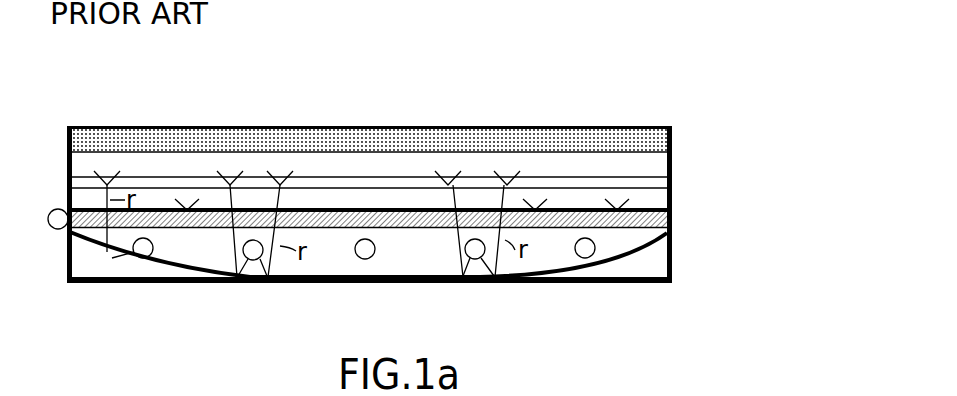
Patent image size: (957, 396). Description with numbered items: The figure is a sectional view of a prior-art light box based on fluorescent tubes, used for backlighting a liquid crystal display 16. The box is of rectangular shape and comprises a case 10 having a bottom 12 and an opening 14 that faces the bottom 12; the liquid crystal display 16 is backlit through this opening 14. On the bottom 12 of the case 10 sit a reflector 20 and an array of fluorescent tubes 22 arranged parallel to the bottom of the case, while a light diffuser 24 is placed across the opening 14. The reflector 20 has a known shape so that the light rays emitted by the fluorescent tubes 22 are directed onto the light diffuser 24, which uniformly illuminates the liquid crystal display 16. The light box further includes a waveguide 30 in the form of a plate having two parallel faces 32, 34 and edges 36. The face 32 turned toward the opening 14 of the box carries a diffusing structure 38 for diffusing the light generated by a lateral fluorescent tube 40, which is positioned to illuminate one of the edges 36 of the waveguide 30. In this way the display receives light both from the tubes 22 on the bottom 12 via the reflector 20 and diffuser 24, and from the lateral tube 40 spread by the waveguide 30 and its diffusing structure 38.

The case 10 is at (672, 259).
The bottom 12 is at (600, 310).
The opening 14 is at (607, 113).
The liquid crystal display 16 is at (383, 136).
The reflector 20 is at (158, 270).
The fluorescent tubes 22 is at (365, 259).
The light diffuser 24 is at (156, 188).
The waveguide 30 is at (328, 262).
The face 32 is at (410, 228).
The face 34 is at (410, 228).
The edges 36 is at (672, 220).
The diffusing structure 38 is at (316, 305).
The lateral fluorescent tube 40 is at (48, 214).